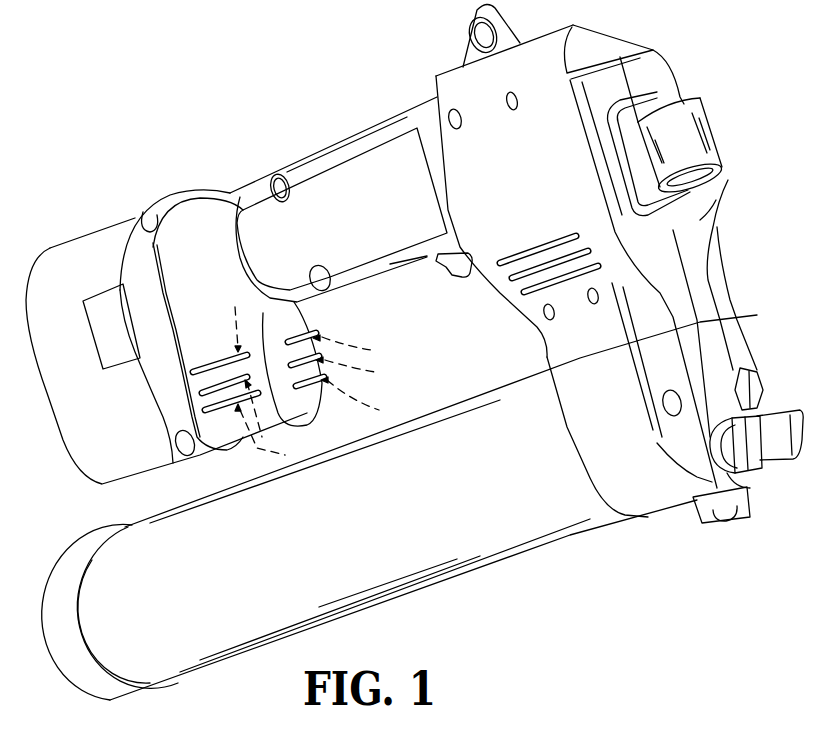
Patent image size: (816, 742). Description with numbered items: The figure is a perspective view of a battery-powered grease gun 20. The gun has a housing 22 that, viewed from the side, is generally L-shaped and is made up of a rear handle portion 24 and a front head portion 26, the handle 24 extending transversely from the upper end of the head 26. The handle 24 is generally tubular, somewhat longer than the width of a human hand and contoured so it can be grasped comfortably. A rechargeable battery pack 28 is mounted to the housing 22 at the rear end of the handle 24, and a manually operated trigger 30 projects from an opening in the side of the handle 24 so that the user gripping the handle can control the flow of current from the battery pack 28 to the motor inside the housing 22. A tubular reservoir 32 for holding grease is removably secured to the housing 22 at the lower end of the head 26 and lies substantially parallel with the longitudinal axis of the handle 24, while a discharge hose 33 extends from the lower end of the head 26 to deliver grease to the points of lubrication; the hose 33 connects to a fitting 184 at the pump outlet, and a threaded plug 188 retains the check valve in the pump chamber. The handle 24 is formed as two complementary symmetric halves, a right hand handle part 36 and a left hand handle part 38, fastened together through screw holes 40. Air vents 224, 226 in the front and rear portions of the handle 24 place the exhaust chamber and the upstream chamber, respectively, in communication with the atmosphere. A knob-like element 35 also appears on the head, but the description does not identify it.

The grease gun 20 is at (360, 82).
The housing 22 is at (280, 157).
The rear handle portion 24 is at (347, 187).
The front head portion 26 is at (737, 337).
The rechargeable battery pack 28 is at (70, 248).
The trigger 30 is at (462, 276).
The tubular reservoir 32 is at (537, 537).
The discharge hose 33 is at (777, 430).
The knob 35 is at (707, 100).
The right hand handle part 36 is at (560, 347).
The left hand handle part 38 is at (718, 212).
The screw holes 40 is at (270, 180).
The fitting 184 is at (757, 490).
The threaded plug 188 is at (693, 507).
The air vents 224 is at (517, 282).
The air vents 226 is at (215, 362).